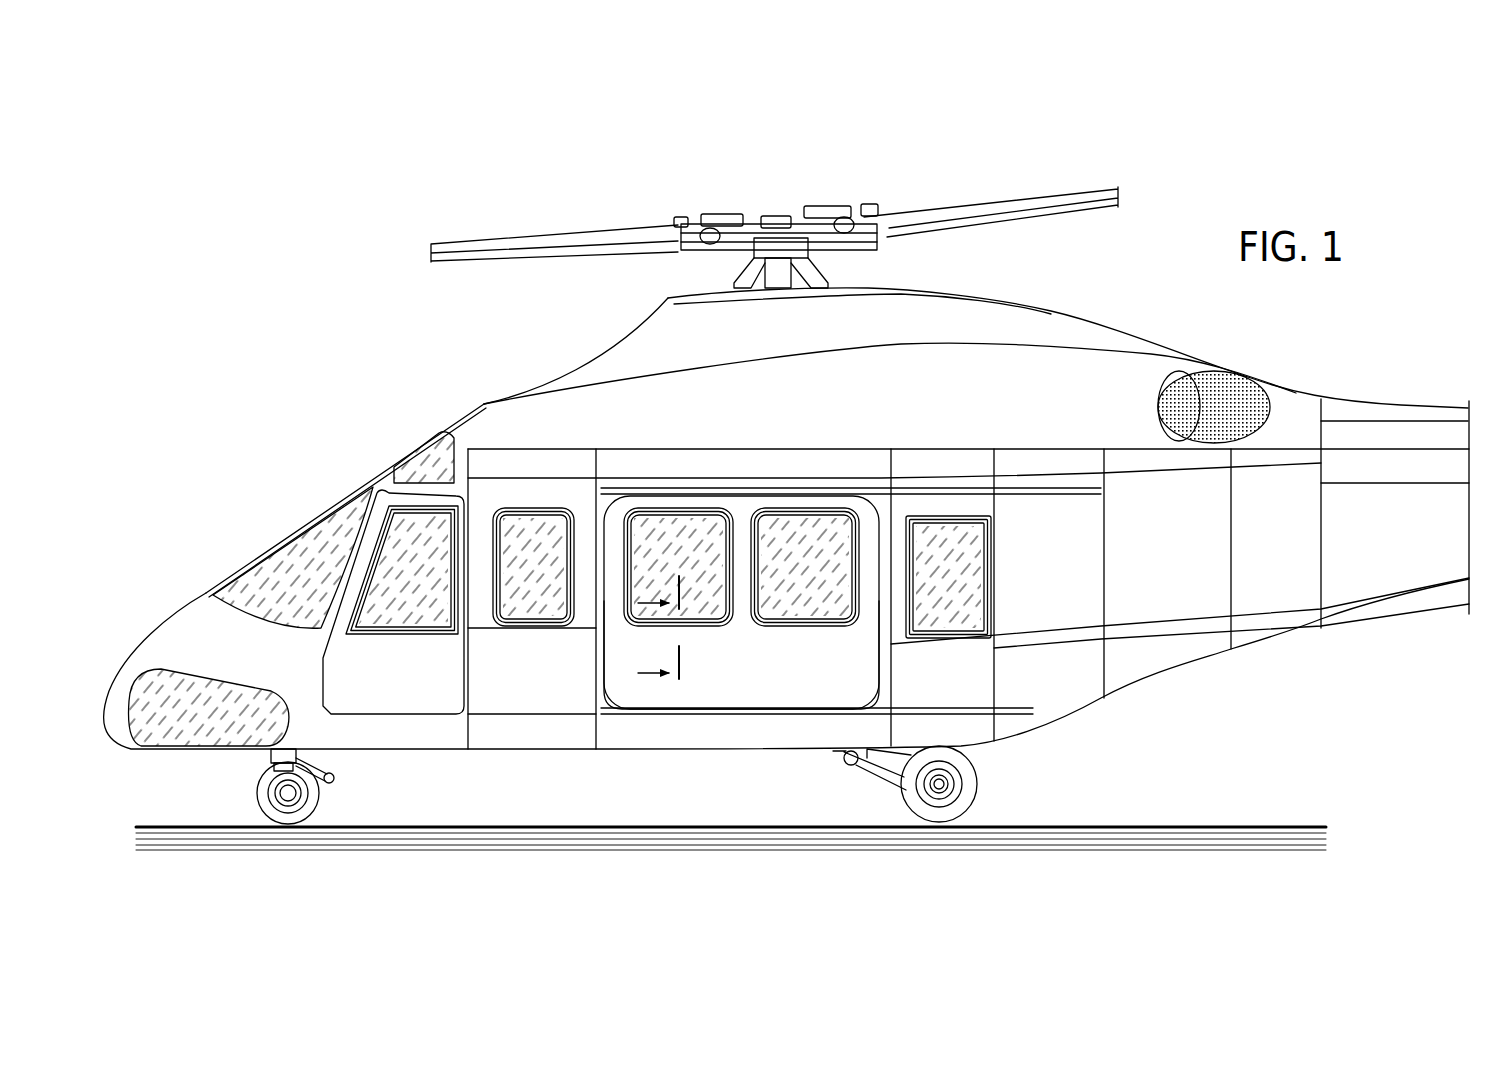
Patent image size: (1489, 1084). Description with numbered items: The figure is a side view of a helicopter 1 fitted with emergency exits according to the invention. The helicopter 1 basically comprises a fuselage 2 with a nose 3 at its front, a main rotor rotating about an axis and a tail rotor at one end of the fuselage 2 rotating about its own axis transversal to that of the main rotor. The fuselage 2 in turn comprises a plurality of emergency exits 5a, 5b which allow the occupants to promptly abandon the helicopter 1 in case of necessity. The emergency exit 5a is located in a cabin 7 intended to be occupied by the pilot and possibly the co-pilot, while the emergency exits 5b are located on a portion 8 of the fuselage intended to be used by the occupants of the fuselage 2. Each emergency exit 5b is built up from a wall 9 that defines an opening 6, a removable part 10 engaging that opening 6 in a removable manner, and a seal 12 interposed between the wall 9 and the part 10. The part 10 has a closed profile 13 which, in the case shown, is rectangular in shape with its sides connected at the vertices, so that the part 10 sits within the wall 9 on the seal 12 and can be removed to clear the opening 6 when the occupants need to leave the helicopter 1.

The helicopter 1 is at (748, 184).
The fuselage 2 is at (1072, 367).
The nose 3 is at (150, 650).
The emergency exit 5a is at (302, 556).
The emergency exit 5b is at (776, 666).
The opening 6 is at (392, 617).
The cabin 7 is at (462, 430).
The portion of the fuselage 8 is at (636, 770).
The wall 9 is at (403, 672).
The removable part 10 is at (389, 556).
The seal 12 is at (420, 634).
The closed profile 13 is at (418, 521).